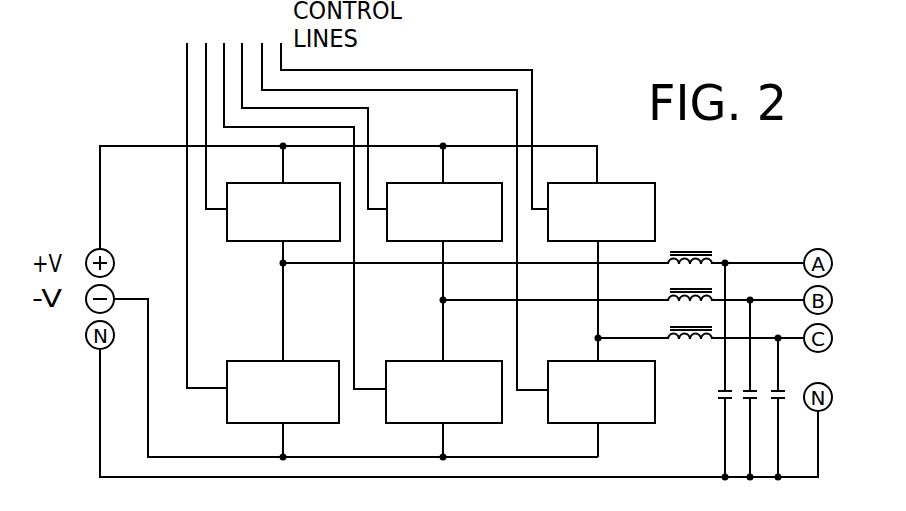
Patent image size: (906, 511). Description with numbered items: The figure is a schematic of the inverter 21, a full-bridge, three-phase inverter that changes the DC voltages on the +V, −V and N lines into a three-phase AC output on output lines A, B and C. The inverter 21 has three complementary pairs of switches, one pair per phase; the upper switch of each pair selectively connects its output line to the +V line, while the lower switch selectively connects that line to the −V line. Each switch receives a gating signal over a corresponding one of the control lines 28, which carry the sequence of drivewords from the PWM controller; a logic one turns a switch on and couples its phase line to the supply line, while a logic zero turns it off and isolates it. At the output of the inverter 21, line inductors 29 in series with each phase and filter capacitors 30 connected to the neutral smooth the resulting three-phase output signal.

The inverter 21 is at (560, 83).
The control lines 28 is at (178, 51).
The line inductors 29 is at (690, 251).
The filter capacitors 30 is at (720, 396).